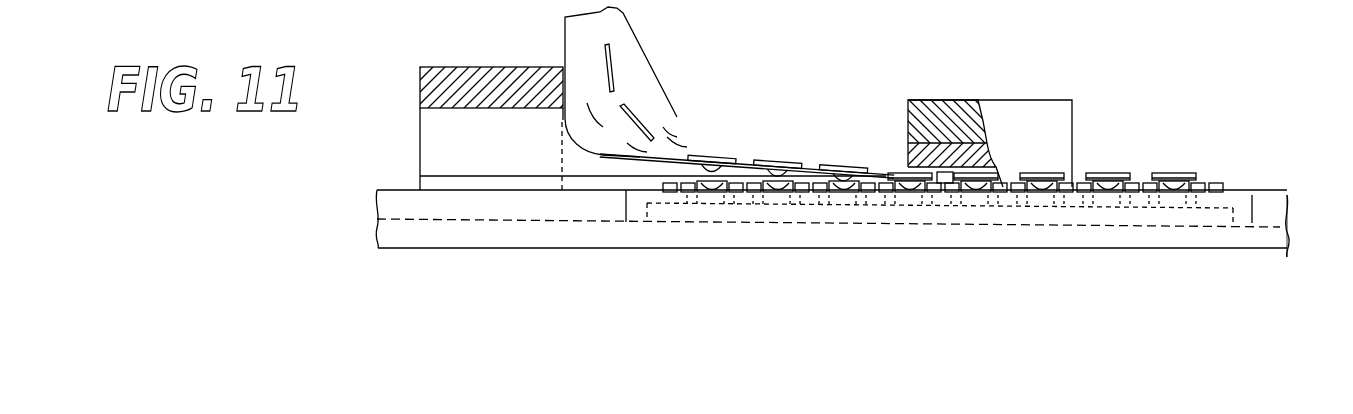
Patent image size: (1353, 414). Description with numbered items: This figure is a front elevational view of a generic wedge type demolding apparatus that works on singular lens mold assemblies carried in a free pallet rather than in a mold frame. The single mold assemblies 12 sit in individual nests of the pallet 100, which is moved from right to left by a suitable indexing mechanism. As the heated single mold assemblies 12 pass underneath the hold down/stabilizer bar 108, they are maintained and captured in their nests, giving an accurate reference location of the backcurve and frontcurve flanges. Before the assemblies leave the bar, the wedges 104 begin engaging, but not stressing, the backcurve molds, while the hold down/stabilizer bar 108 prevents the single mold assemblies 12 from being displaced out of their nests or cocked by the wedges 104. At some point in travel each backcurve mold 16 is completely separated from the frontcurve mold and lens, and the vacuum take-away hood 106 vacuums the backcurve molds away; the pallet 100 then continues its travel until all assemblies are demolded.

The pallet 100 is at (1080, 185).
The single mold assembly 12 is at (1181, 173).
The backcurve mold 16 is at (693, 157).
The wedge 104 is at (733, 163).
The vacuum take-away hood 106 is at (623, 29).
The hold down/stabilizer bar 108 is at (1018, 157).